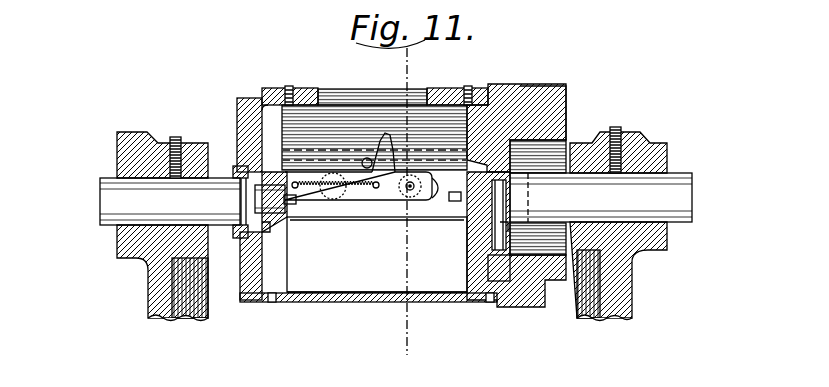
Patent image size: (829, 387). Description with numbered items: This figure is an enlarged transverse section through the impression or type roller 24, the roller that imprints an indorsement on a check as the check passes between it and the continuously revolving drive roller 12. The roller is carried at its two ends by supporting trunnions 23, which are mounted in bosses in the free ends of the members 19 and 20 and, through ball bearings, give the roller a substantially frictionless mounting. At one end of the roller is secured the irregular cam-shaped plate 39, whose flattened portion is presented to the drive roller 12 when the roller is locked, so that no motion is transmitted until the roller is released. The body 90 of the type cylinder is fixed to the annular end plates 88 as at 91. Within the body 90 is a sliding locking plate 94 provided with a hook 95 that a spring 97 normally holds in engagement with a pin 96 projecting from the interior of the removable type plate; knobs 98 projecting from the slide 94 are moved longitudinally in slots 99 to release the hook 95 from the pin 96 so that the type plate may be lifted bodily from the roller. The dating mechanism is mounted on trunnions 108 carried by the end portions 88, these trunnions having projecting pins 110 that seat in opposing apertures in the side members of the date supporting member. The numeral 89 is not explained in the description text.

The drive roller 12 is at (395, 60).
The member 19 is at (148, 288).
The member 20 is at (627, 272).
The supporting trunnions 23 is at (100, 182).
The type roller 24 is at (377, 278).
The cam-shaped plate 39 is at (548, 88).
The end plates 88 is at (240, 113).
The collar 89 is at (245, 240).
The body 90 is at (300, 300).
The fastening 91 is at (270, 303).
The sliding locking plate 94 is at (390, 200).
The hook 95 is at (383, 152).
The pin 96 is at (362, 160).
The spring 97 is at (352, 201).
The knobs 98 is at (331, 201).
The slots 99 is at (436, 195).
The trunnion 108 is at (287, 225).
The projecting pins 110 is at (292, 199).